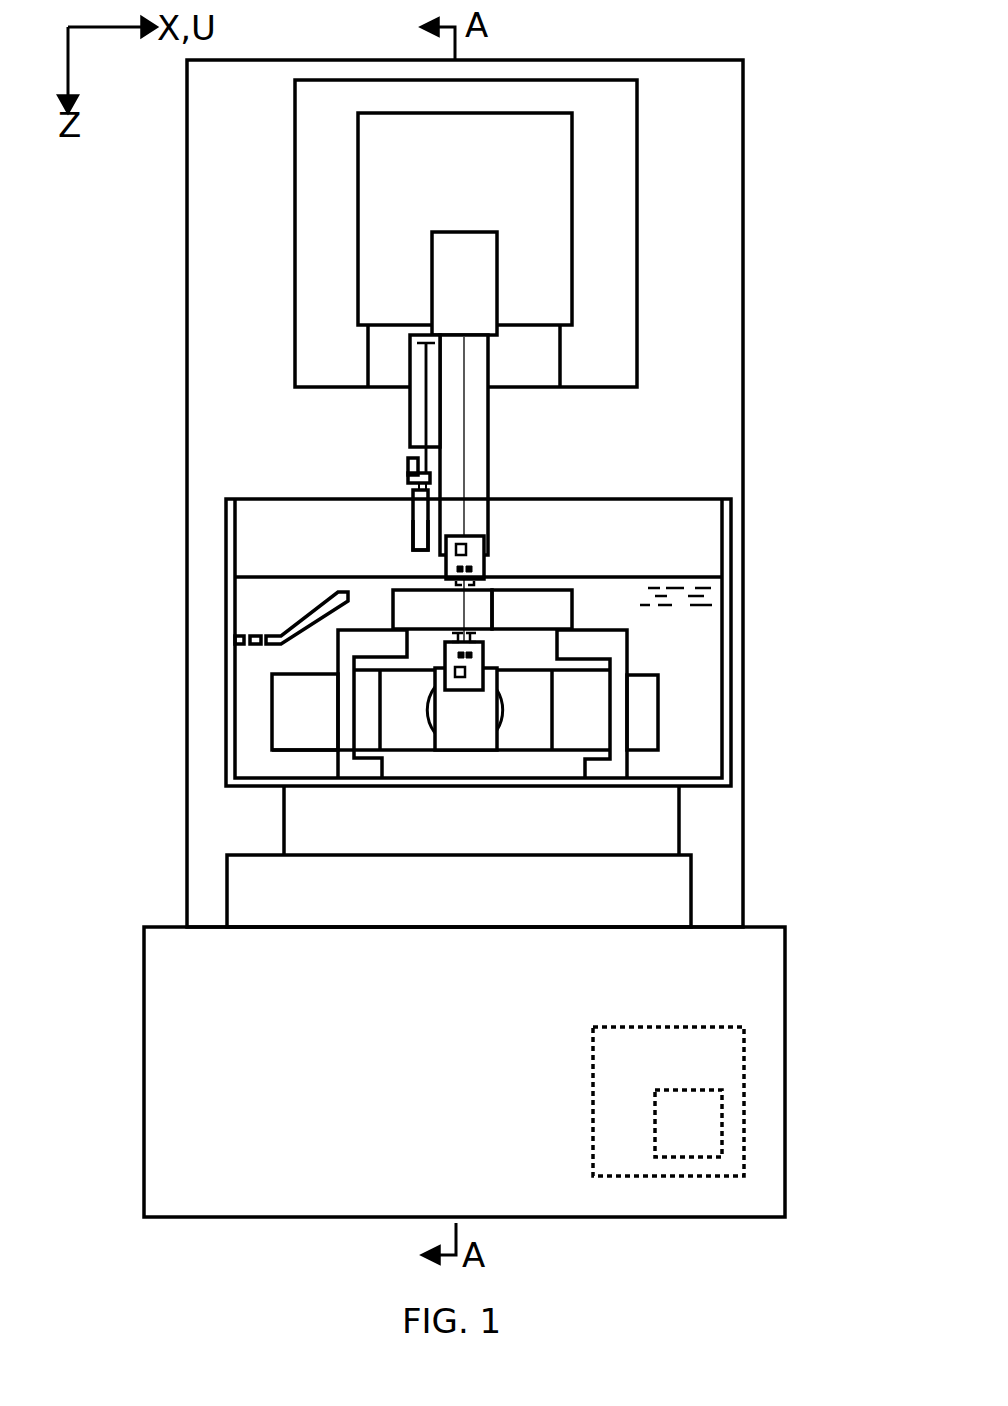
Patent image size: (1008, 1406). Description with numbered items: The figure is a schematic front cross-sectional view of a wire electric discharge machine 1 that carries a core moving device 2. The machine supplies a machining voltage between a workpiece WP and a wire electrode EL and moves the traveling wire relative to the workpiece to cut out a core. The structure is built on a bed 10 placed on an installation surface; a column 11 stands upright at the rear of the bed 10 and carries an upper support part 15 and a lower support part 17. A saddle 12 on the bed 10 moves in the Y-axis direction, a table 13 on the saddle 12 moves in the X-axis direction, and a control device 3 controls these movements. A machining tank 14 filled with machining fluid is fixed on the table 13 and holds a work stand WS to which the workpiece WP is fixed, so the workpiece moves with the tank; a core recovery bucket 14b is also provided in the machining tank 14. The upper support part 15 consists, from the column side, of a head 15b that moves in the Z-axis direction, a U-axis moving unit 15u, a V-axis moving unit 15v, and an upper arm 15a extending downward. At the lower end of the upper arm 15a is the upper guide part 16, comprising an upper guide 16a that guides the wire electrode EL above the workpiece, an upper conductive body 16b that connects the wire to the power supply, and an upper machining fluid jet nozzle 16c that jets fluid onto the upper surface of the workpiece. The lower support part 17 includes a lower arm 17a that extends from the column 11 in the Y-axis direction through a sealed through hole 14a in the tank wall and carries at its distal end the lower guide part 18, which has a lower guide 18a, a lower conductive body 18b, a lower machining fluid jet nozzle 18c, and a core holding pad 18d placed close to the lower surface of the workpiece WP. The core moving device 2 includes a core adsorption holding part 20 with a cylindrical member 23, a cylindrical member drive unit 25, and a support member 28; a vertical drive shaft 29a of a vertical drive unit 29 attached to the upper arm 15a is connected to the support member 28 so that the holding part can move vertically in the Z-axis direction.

The wire electric discharge machine 1 is at (478, 476).
The core moving device 2 is at (249, 433).
The control device 3 is at (712, 1065).
The bed 10 is at (144, 1075).
The column 11 is at (720, 115).
The saddle 12 is at (227, 897).
The table 13 is at (284, 822).
The machining tank 14 is at (730, 775).
The through hole 14a is at (503, 718).
The core recovery bucket 14b is at (283, 625).
The upper support part 15 is at (586, 194).
The upper arm 15a is at (490, 445).
The head 15b is at (624, 105).
The U-axis moving unit 15u is at (538, 125).
The V-axis moving unit 15v is at (530, 360).
The upper guide part 16 is at (599, 515).
The upper guide 16a is at (487, 568).
The upper conductive body 16b is at (487, 548).
The upper machining fluid jet nozzle 16c is at (480, 587).
The lower support part 17 is at (447, 713).
The lower arm 17a is at (452, 733).
The lower guide part 18 is at (461, 686).
The lower guide 18a is at (472, 655).
The lower conductive body 18b is at (465, 673).
The lower machining fluid jet nozzle 18c is at (480, 640).
The core holding pad 18d is at (443, 634).
The core adsorption holding part 20 is at (413, 507).
The cylindrical member 23 is at (413, 527).
The cylindrical member drive unit 25 is at (408, 462).
The support member 28 is at (408, 477).
The vertical drive unit 29 is at (410, 373).
The vertical drive shaft 29a is at (420, 418).
The wire electrode EL is at (466, 403).
The workpiece WP is at (577, 607).
The work stand WS is at (627, 725).